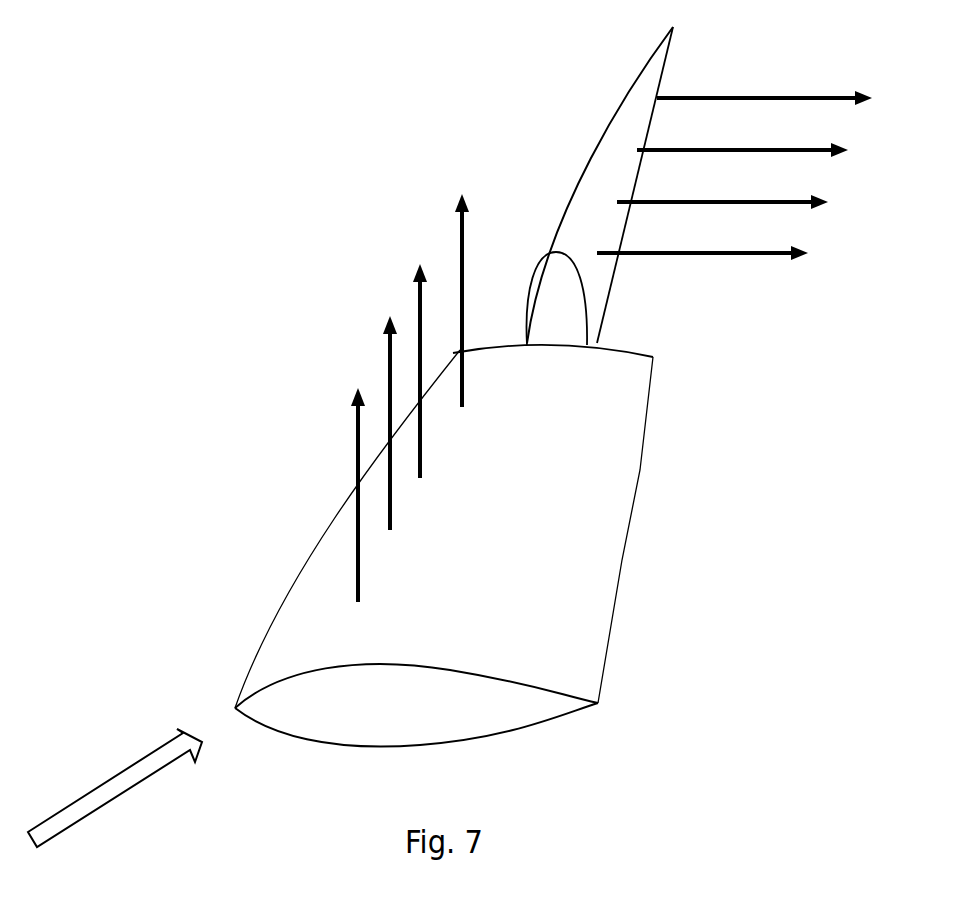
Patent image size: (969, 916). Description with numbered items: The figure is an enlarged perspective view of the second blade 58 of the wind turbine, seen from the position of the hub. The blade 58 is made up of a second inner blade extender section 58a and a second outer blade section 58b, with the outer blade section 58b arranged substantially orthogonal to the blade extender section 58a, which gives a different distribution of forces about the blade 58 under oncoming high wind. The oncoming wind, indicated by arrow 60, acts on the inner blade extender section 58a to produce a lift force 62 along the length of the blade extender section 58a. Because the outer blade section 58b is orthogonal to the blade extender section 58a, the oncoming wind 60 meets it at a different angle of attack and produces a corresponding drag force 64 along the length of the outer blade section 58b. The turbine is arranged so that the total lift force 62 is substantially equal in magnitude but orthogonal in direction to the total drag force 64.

The second blade 58 is at (226, 200).
The second inner blade extender section 58a is at (525, 570).
The second outer blade section 58b is at (603, 162).
The oncoming wind 60 is at (115, 791).
The lift force 62 is at (410, 398).
The drag force 64 is at (734, 175).